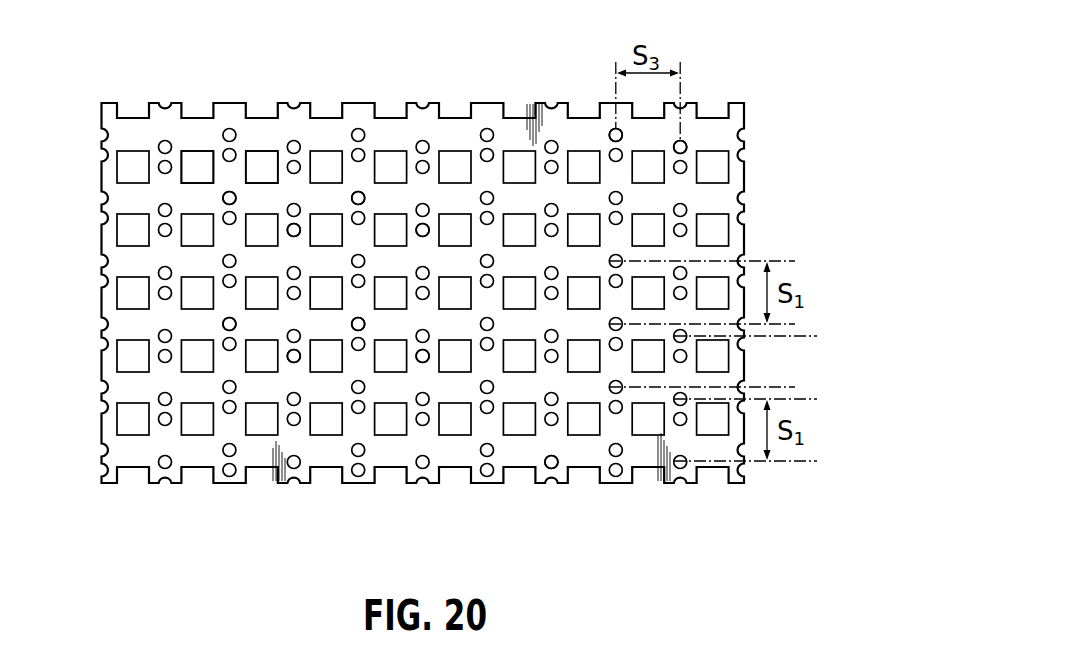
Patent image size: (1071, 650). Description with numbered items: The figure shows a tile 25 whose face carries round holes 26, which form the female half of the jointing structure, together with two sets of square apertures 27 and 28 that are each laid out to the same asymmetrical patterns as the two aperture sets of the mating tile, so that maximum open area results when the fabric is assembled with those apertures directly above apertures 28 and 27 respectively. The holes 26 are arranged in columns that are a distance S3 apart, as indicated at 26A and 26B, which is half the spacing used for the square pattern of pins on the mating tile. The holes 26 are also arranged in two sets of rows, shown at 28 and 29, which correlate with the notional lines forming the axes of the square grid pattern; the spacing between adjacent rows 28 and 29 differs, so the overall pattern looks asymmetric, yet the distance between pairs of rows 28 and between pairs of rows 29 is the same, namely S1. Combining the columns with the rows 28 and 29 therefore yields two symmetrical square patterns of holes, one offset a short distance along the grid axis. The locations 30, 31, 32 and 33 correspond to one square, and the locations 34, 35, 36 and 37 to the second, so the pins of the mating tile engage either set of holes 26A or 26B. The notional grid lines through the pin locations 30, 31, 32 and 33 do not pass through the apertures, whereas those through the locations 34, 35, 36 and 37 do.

The tile 25 is at (328, 491).
The holes 26 is at (559, 465).
The first set of holes 26A is at (609, 134).
The second set of holes 26B is at (688, 145).
The apertures 27 is at (262, 165).
The apertures / rows 28 is at (327, 165).
The rows 29 is at (792, 334).
The location 30 is at (230, 196).
The location 31 is at (362, 196).
The location 32 is at (231, 323).
The location 33 is at (362, 325).
The location 34 is at (292, 229).
The location 35 is at (426, 226).
The location 36 is at (292, 356).
The location 37 is at (427, 354).